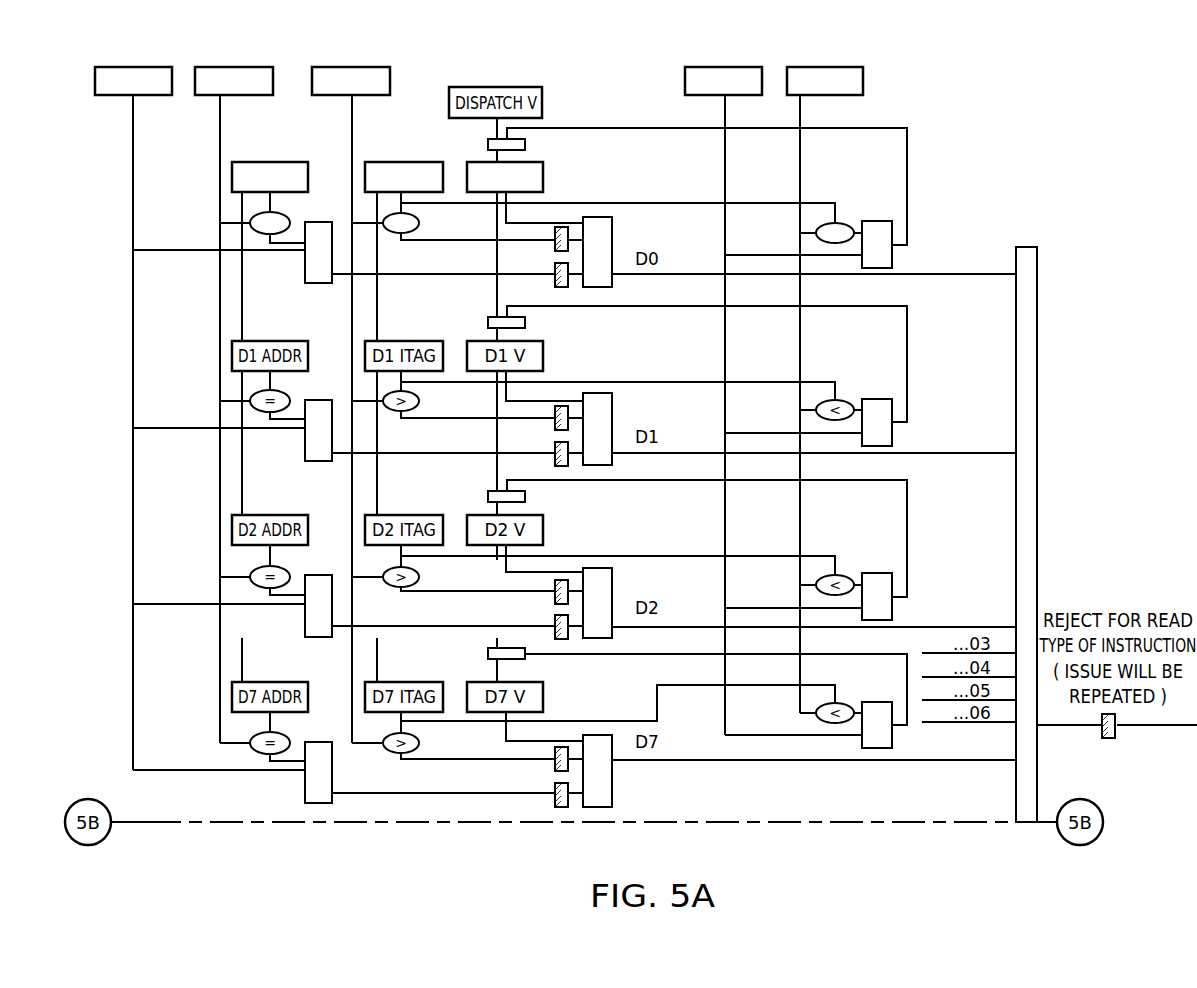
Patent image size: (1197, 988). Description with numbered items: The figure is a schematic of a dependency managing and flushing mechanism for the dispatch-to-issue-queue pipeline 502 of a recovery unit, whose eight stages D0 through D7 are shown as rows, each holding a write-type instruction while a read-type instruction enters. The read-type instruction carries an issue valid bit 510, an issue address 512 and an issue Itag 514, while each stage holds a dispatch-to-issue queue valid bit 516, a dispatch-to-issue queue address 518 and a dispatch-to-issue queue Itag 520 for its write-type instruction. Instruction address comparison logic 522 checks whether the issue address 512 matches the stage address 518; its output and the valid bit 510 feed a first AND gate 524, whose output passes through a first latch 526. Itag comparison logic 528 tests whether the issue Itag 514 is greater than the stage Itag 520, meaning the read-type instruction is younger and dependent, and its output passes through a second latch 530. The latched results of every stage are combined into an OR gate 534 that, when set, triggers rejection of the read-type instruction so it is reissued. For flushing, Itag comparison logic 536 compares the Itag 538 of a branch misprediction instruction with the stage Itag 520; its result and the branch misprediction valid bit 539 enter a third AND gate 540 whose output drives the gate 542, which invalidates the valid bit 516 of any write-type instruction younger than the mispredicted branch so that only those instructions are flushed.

The dispatch-to-issue-queue pipeline 502 is at (128, 250).
The issue valid bit 510 is at (113, 96).
The issue address 512 is at (205, 96).
The issue Itag 514 is at (317, 96).
The dispatch-to-issue queue valid bit 516 is at (543, 168).
The dispatch-to-issue queue address 518 is at (392, 162).
The dispatch-to-issue queue Itag 520 is at (248, 162).
The instruction address comparison logic 522 is at (284, 214).
The first AND gate 524 is at (315, 283).
The first latch 526 is at (612, 235).
The Itag comparison logic 528 is at (419, 224).
The second latch 530 is at (565, 227).
The OR gate 534 is at (1037, 305).
The Itag comparison logic 536 is at (847, 223).
The Itag of the branch misprediction instruction 538 is at (863, 83).
The valid bit of the branch misprediction instruction 539 is at (685, 82).
The third AND gate 540 is at (893, 260).
The gate 542 is at (486, 144).